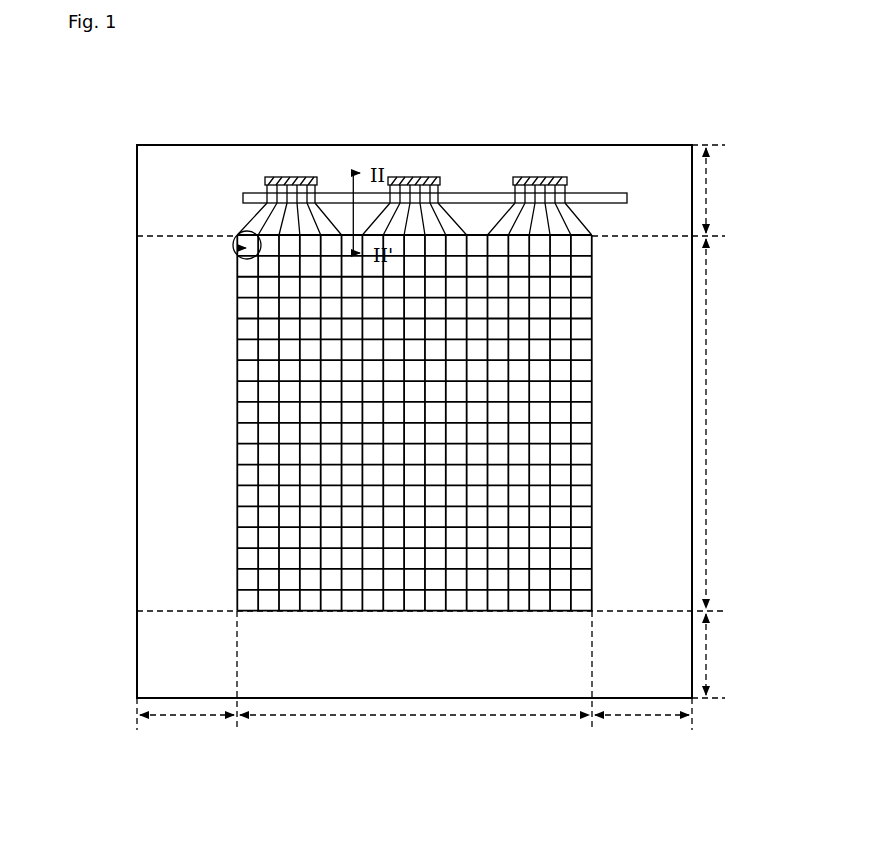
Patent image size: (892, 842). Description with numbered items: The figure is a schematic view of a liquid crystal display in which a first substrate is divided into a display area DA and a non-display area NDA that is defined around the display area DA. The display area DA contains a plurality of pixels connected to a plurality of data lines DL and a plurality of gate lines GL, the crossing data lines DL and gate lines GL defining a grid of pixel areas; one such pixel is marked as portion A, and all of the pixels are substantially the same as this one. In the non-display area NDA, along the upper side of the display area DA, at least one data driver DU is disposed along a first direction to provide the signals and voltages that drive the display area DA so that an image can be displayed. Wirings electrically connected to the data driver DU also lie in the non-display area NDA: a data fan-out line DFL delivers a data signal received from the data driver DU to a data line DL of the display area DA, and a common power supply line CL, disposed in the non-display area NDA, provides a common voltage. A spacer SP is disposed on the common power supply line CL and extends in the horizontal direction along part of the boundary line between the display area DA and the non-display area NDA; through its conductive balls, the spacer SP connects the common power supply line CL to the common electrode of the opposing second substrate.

The common power supply line CL is at (268, 191).
The data driver DU is at (550, 177).
The spacer SP is at (604, 197).
The data fan-out line DFL is at (580, 226).
The portion 'A' (pixel) A is at (232, 240).
The data line DL is at (238, 330).
The gate line GL is at (248, 342).
The non-display area NDA is at (450, 451).
The display area DA is at (491, 496).